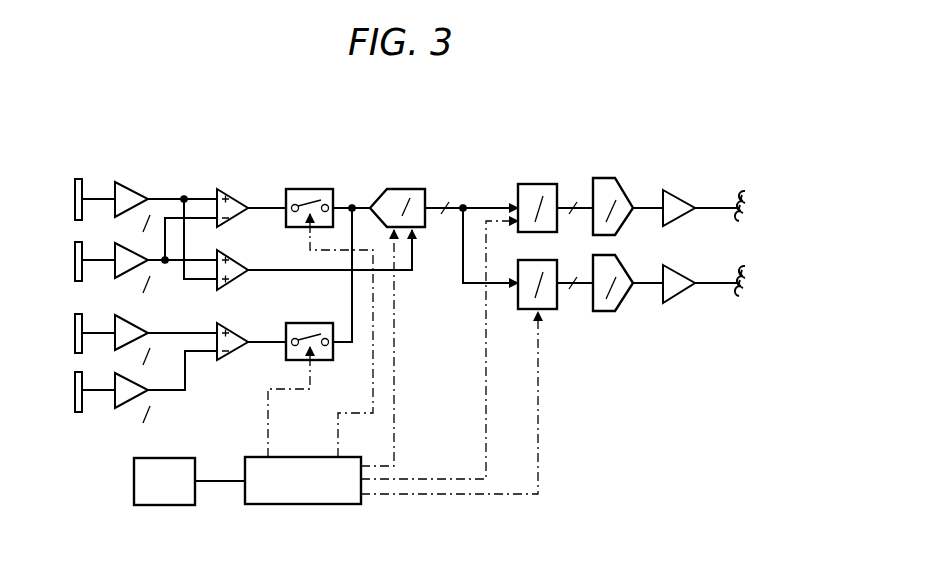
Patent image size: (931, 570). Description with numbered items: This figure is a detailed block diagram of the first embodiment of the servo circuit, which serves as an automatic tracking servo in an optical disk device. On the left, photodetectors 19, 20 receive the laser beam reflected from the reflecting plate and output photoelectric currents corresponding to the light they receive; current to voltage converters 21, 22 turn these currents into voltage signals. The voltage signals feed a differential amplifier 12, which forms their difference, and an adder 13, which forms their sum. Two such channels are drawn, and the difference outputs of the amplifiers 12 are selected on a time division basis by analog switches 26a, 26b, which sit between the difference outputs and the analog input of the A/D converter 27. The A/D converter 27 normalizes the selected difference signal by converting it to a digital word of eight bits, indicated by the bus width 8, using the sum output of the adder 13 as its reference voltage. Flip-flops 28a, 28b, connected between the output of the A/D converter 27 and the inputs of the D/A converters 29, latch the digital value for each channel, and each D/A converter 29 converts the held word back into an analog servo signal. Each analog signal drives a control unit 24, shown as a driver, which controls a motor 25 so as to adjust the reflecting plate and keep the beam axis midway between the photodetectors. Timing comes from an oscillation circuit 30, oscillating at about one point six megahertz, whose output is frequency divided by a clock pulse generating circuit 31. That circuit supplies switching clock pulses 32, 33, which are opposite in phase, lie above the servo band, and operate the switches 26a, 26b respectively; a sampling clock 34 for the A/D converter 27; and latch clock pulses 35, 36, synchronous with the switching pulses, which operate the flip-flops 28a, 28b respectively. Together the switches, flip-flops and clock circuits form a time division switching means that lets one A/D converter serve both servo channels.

The photodetector 19 is at (75, 200).
The photodetector 20 is at (75, 262).
The current to voltage converter 21 is at (132, 189).
The current to voltage converter 22 is at (131, 281).
The differential amplifier 12 is at (229, 189).
The adder 13 is at (229, 266).
The analog switch 26a is at (335, 192).
The analog switch 26b is at (321, 360).
The A/D converter 27 is at (402, 189).
The flip-flop 28a is at (512, 190).
The flip-flop 28b is at (557, 300).
The D/A converter 29 is at (622, 186).
The control unit 24 is at (682, 194).
The motor 25 is at (753, 209).
The oscillation circuit 30 is at (160, 505).
The clock pulse generating circuit 31 is at (308, 505).
The switching clock pulse 32 is at (335, 446).
The switching clock pulse 33 is at (263, 446).
The sampling clock 34 is at (396, 396).
The latch clock pulse 35 is at (488, 450).
The latch clock pulse 36 is at (540, 455).
The 8-bit data bus 8 is at (512, 234).